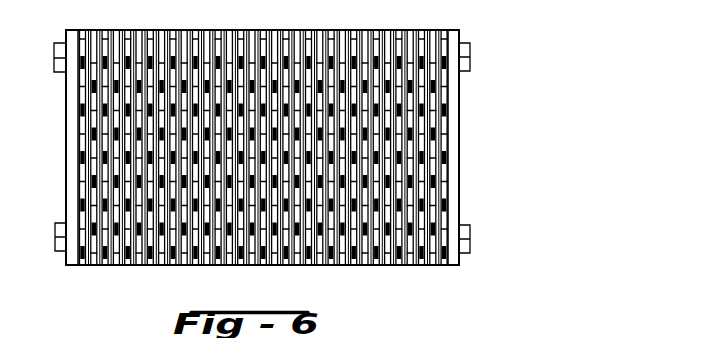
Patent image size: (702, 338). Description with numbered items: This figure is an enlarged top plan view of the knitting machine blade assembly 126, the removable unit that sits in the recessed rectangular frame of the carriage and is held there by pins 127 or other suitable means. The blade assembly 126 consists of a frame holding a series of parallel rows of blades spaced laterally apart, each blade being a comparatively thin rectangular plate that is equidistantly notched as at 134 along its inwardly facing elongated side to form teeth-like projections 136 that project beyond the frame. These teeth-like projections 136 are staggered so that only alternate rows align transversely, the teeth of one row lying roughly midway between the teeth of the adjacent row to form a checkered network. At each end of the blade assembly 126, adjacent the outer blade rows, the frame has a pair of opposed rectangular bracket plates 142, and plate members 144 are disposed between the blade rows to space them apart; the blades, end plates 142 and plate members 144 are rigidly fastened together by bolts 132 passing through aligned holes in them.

The blade assembly 126 is at (460, 115).
The pins 127 is at (80, 145).
The bolts 132 is at (46, 50).
The notches 134 is at (438, 37).
The teeth-like projections 136 is at (438, 72).
The bracket plates 142 is at (62, 254).
The plate members 144 is at (136, 253).